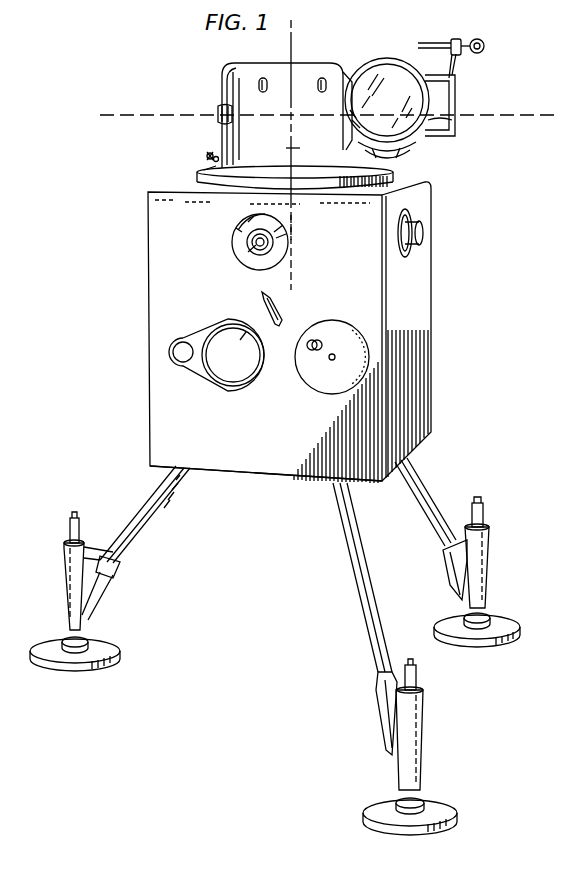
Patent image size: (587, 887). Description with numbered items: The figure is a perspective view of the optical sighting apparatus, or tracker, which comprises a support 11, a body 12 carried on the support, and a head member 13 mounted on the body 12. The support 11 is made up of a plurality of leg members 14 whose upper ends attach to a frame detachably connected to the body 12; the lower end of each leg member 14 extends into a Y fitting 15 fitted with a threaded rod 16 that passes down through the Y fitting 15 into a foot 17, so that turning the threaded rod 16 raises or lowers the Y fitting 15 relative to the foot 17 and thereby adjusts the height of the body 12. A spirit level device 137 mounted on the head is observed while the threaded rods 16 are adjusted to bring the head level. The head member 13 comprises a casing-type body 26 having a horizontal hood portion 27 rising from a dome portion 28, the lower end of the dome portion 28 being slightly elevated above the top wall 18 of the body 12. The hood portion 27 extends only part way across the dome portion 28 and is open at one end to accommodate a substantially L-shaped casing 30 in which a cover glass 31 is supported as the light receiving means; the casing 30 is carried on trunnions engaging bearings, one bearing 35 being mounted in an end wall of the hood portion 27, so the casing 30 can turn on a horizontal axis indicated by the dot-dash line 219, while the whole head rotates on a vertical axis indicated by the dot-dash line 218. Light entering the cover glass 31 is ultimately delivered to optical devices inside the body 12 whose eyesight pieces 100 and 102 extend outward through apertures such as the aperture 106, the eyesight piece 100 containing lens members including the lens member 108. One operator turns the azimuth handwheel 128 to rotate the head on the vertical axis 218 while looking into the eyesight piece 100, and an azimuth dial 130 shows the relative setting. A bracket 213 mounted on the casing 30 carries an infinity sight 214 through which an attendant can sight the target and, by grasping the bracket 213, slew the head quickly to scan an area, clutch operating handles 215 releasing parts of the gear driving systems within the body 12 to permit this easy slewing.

The support 11 is at (420, 478).
The body 12 is at (433, 307).
The head member 13 is at (287, 60).
The leg members 14 is at (150, 528).
The Y fitting 15 is at (488, 550).
The threaded rod 16 is at (484, 512).
The foot 17 is at (500, 620).
The top wall of the body 18 is at (402, 181).
The casing-type body 26 is at (286, 148).
The hood portion 27 is at (222, 82).
The dome portion 28 is at (204, 170).
The L-shaped casing 30 is at (380, 172).
The cover glass 31 is at (389, 72).
The bearing 35 is at (218, 115).
The eyesight piece 100 is at (248, 242).
The eyesight piece 102 is at (423, 233).
The aperture 106 is at (242, 228).
The lens member 108 is at (248, 252).
The azimuth handwheel 128 is at (338, 332).
The azimuth dial 130 is at (212, 380).
The spirit level device 137 is at (207, 156).
The bracket 213 is at (455, 108).
The infinity sight 214 is at (484, 46).
The clutch operating handles 215 is at (262, 304).
The vertical axis 218 is at (295, 229).
The horizontal axis 219 is at (502, 116).